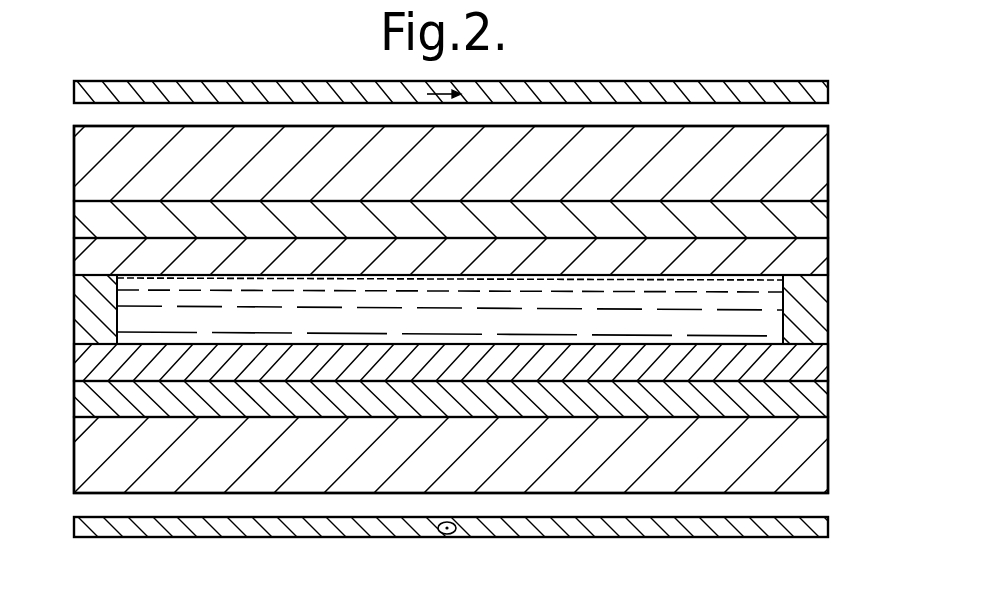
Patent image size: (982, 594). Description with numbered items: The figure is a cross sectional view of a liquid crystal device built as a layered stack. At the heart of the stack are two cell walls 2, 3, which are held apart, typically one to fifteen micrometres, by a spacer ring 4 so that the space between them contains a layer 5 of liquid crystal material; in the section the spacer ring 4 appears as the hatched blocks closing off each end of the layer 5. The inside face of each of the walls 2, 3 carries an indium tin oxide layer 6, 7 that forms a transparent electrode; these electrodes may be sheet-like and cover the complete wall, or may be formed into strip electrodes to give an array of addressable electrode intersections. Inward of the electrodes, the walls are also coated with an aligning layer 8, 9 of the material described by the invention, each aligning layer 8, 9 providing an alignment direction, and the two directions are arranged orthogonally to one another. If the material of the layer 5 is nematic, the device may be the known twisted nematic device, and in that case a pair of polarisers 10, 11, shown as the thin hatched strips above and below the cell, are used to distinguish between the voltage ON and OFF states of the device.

The cell wall 2 is at (807, 170).
The cell wall 3 is at (800, 462).
The spacer ring 4 is at (805, 308).
The layer of liquid crystal material 5 is at (765, 325).
The indium tin oxide layer 6 is at (88, 220).
The indium tin oxide layer 7 is at (95, 406).
The aligning layer 8 is at (88, 258).
The aligning layer 9 is at (84, 365).
The polariser 10 is at (144, 92).
The polariser 11 is at (145, 539).